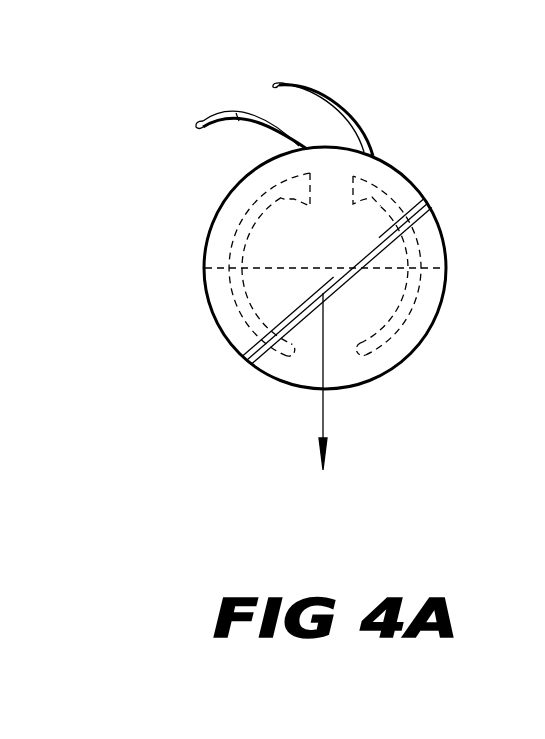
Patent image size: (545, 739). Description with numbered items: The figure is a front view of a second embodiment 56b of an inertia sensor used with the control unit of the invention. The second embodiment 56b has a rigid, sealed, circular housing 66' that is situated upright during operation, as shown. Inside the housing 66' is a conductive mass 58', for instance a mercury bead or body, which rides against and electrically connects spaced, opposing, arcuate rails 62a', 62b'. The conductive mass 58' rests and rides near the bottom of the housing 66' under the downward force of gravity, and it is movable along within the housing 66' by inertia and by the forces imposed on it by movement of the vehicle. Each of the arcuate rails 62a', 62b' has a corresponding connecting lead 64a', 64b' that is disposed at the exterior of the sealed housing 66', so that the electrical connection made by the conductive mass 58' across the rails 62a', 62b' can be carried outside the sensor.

The second embodiment of the inertia sensor 56b is at (427, 110).
The circular housing 66' is at (343, 268).
The conductive mass 58' is at (332, 264).
The arcuate rail 62a' is at (230, 328).
The arcuate rail 62b' is at (426, 330).
The connecting lead 64a' is at (241, 143).
The connecting lead 64b' is at (326, 97).